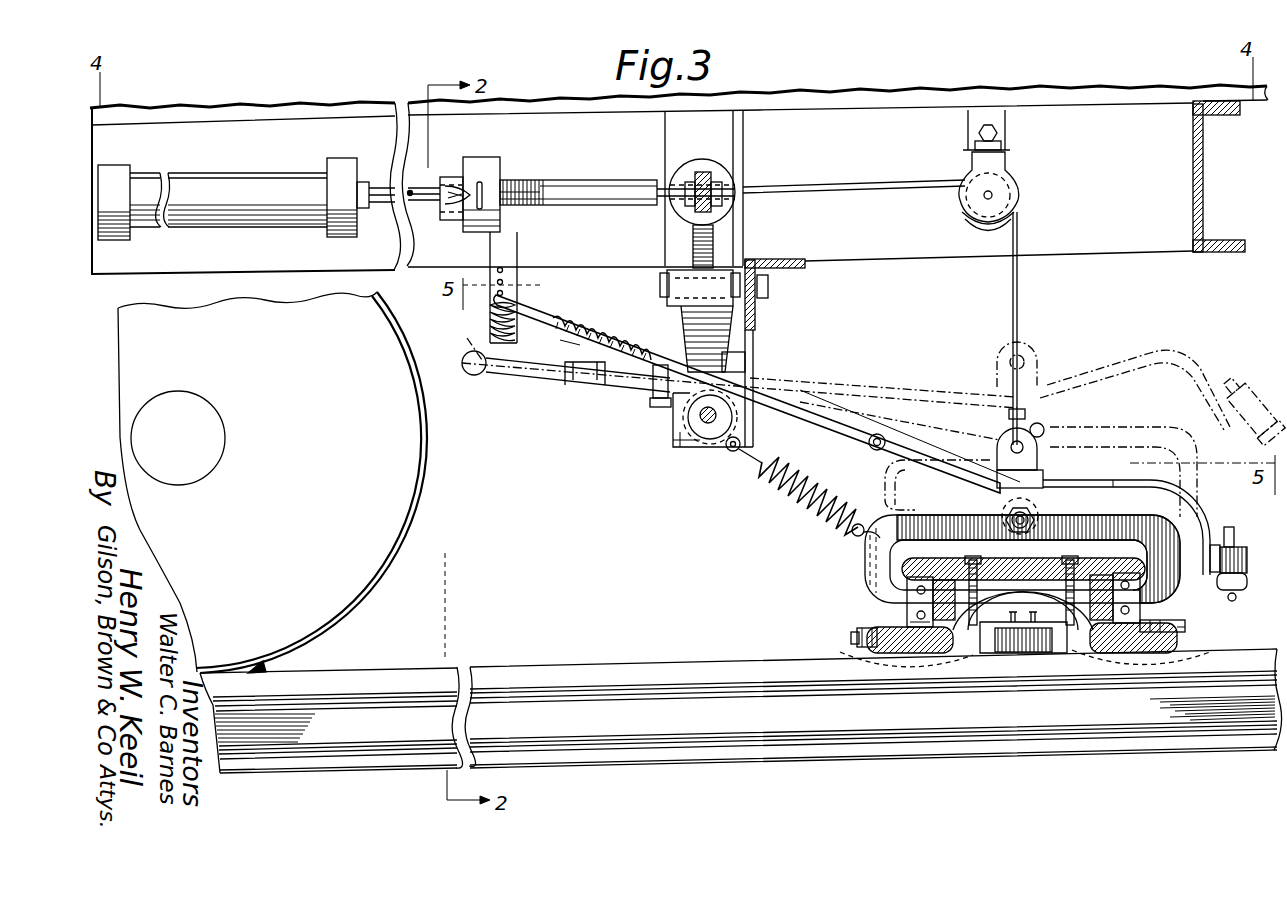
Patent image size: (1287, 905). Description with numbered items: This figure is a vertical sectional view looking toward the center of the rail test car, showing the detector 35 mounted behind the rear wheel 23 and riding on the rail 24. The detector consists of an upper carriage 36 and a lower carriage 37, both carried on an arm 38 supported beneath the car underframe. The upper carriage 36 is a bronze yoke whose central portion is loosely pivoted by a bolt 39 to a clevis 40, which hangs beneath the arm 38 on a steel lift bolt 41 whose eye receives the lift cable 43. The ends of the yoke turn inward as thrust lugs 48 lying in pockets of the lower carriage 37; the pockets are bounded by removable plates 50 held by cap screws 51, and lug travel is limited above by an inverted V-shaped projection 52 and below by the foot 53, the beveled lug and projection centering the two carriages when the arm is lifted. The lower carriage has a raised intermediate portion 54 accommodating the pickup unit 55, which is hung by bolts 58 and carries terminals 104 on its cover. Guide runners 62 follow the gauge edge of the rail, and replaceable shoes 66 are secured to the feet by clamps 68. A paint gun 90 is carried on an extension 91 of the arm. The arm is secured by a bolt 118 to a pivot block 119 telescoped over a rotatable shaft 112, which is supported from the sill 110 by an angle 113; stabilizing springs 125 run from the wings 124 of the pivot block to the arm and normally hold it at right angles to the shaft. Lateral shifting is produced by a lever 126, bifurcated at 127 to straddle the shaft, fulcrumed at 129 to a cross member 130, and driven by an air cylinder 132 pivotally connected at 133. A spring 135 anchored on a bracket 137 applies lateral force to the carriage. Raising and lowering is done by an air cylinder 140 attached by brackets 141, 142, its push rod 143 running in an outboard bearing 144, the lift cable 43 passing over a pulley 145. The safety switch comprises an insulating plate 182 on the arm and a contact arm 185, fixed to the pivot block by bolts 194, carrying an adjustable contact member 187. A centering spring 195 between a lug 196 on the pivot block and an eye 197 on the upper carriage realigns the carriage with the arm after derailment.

The rear wheel 23 is at (400, 500).
The rail 24 is at (567, 676).
The detector 35 is at (1136, 517).
The upper carriage 36 is at (1108, 522).
The lower carriage 37 is at (1164, 614).
The arm 38 is at (867, 398).
The bolt 39 is at (1035, 518).
The clevis 40 is at (1000, 498).
The lift bolt 41 is at (1001, 455).
The lift cable 43 is at (572, 188).
The thrust lugs 48 is at (905, 607).
The removable plates 50 is at (918, 617).
The cap screws 51 is at (923, 621).
The inverted V-shaped projection 52 is at (905, 570).
The foot 53 is at (868, 630).
The intermediate portion 54 is at (1013, 583).
The pickup unit 55 is at (1025, 642).
The bolts 58 is at (977, 605).
The guide runners 62 is at (925, 668).
The shoes 66 is at (890, 652).
The clamps 68 is at (862, 645).
The paint gun 90 is at (1243, 590).
The extension 91 is at (1125, 487).
The terminals 104 is at (1020, 614).
The sill 110 is at (1125, 240).
The rotatable shaft 112 is at (722, 420).
The angle 113 is at (750, 342).
The bolt 118 is at (747, 357).
The pivot block 119 is at (707, 433).
The wings 124 is at (688, 413).
The stabilizing springs 125 is at (578, 327).
The lever 126 is at (690, 325).
The bifurcated lower end 127 is at (672, 447).
The fulcrum 129 is at (667, 280).
The cross member 130 is at (760, 308).
The air cylinder 132 is at (720, 163).
The pivotal connection 133 is at (717, 190).
The spring 135 is at (490, 320).
The bracket 137 is at (510, 245).
The air cylinder 140 is at (208, 180).
The bracket 141 is at (120, 172).
The bracket 142 is at (337, 167).
The push rod 143 is at (383, 190).
The outboard bearing 144 is at (487, 165).
The pulley 145 is at (979, 233).
The insulating plate 182 is at (567, 342).
The contact arm 185 is at (622, 385).
The contact member 187 is at (572, 367).
The bolts 194 is at (665, 400).
The centering spring 195 is at (805, 500).
The lug 196 is at (733, 452).
The eye 197 is at (856, 537).